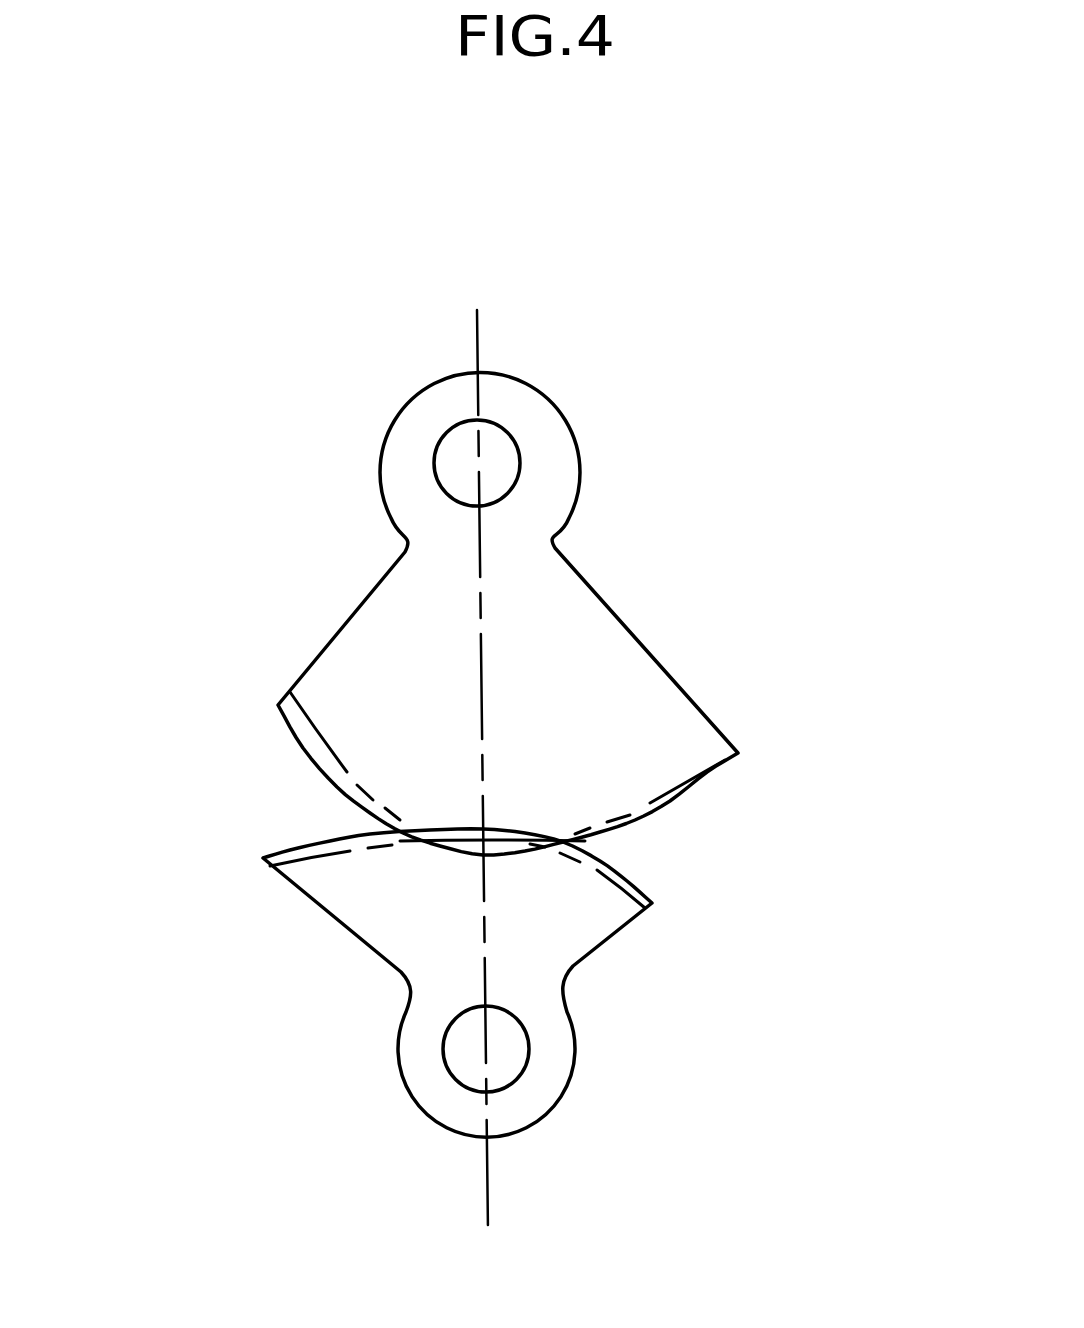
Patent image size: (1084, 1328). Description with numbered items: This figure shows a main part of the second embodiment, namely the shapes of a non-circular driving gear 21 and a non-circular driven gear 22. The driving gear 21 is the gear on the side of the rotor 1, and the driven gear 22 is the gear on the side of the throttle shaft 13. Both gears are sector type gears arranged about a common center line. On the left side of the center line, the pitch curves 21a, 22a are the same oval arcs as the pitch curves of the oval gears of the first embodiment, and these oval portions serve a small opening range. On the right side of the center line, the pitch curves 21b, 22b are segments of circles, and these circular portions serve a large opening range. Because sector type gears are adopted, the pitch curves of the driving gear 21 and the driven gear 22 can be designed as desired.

The rotor 1 is at (500, 457).
The driving gear 21 is at (580, 593).
The pitch curve 21a is at (297, 748).
The pitch curve 21b is at (707, 785).
The driven gear 22 is at (552, 1052).
The pitch curve 22a is at (318, 842).
The pitch curve 22b is at (620, 872).
The throttle shaft 13 is at (463, 1057).